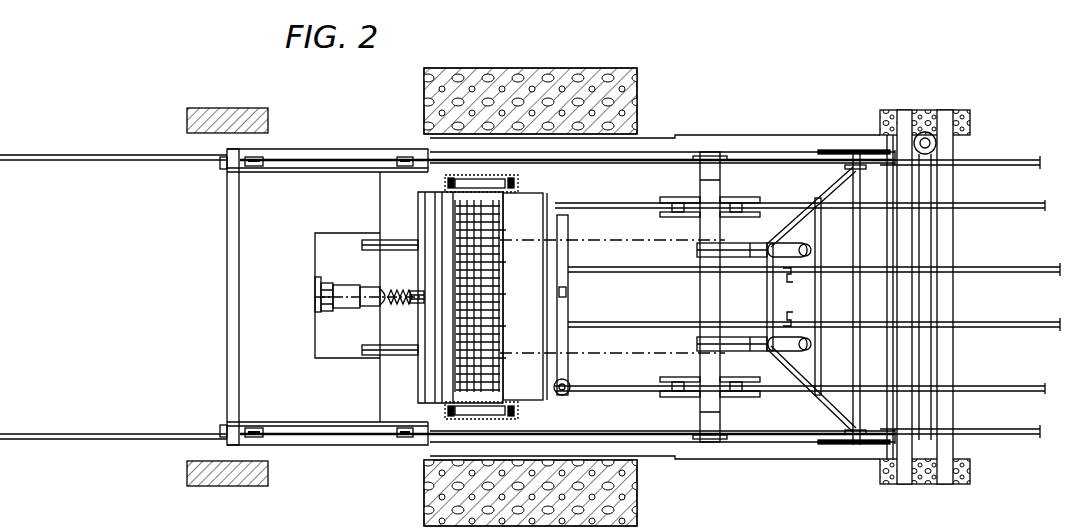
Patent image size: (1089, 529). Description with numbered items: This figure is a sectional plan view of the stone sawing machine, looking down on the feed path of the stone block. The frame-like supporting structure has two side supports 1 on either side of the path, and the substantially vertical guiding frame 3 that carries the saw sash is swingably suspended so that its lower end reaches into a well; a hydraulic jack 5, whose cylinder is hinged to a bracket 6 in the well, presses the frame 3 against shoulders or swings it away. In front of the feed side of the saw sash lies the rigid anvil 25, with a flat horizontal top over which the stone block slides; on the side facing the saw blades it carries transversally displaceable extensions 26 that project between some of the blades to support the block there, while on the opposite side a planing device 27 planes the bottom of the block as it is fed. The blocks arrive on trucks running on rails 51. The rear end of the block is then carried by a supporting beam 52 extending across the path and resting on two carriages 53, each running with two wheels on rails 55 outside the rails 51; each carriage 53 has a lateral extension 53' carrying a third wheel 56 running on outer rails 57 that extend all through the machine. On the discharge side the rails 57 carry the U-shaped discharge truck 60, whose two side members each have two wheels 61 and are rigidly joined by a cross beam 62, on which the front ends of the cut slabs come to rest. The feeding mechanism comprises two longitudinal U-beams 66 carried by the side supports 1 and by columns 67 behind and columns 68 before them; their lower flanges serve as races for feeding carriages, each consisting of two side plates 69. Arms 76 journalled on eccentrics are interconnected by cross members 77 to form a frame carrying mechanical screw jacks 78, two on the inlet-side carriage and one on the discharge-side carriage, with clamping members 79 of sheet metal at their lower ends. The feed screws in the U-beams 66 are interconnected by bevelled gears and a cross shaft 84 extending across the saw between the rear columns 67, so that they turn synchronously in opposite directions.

The side support 1 is at (620, 68).
The guiding frame 3 is at (482, 187).
The hydraulic jack 5 is at (360, 297).
The bracket 6 is at (315, 278).
The anvil 25 is at (528, 210).
The transversally displaceable extensions 26 is at (497, 328).
The planing device 27 is at (547, 255).
The rails 51 is at (1033, 322).
The supporting beam 52 is at (710, 231).
The carriage 53 is at (710, 297).
The lateral extension 53' is at (688, 297).
The rails 55 is at (993, 207).
The third wheel 56 is at (695, 155).
The rails 57 is at (1037, 162).
The discharge truck 60 is at (268, 422).
The wheels 61 is at (255, 157).
The cross beam 62 is at (233, 278).
The longitudinal U-beams 66 is at (797, 142).
The columns 67 is at (935, 113).
The columns 68 is at (240, 108).
The side plates 69 is at (832, 150).
The arms 76 is at (832, 188).
The cross members 77 is at (770, 292).
The mechanical screw jacks 78 is at (807, 248).
The clamping members 79 is at (730, 350).
The cross shaft 84 is at (923, 255).